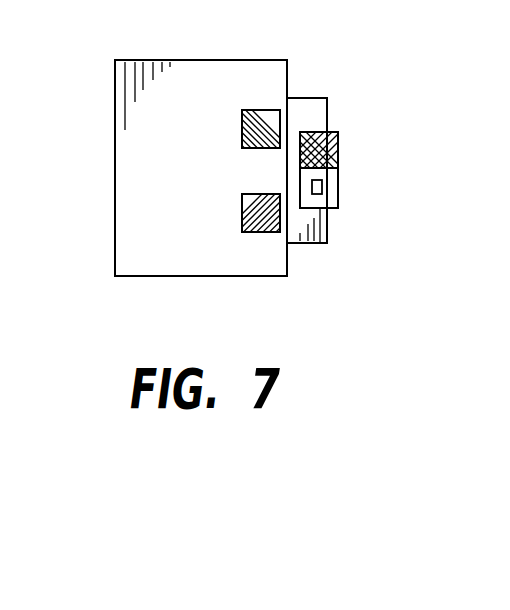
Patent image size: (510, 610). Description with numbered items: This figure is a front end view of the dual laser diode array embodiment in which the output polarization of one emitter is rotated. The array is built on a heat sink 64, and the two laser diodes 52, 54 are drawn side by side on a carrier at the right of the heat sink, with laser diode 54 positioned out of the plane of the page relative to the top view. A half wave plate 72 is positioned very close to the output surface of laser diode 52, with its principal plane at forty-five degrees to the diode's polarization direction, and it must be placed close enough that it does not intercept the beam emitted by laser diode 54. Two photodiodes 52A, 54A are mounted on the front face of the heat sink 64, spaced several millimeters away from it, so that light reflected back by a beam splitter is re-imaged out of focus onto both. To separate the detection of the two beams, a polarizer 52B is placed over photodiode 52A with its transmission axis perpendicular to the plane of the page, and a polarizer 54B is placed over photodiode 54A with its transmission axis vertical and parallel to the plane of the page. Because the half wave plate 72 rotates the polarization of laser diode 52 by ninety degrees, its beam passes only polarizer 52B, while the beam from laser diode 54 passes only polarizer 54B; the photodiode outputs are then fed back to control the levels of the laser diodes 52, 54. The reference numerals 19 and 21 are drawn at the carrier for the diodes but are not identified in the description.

The heat sink 64 is at (117, 86).
The half wave plate 72 is at (318, 132).
The photodiode 52A is at (243, 135).
The polarizer 52B is at (256, 116).
The photodiode 54A is at (243, 221).
The polarizer 54B is at (258, 222).
The laser diode 52 is at (339, 153).
The contact carrier 19 is at (339, 132).
The laser diode 54 is at (320, 188).
The carrier edge 21 is at (338, 208).